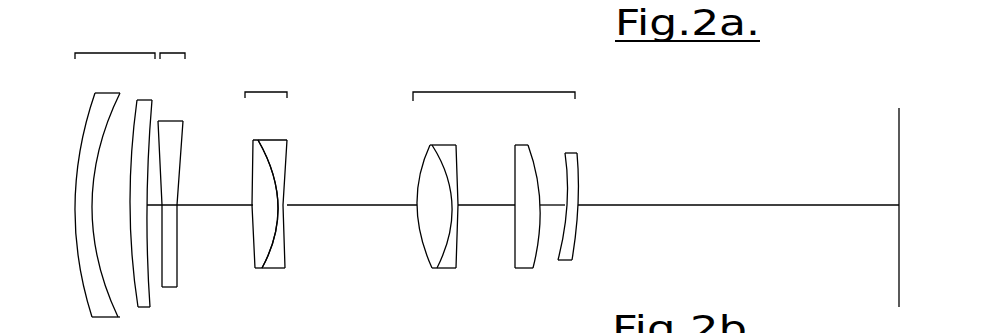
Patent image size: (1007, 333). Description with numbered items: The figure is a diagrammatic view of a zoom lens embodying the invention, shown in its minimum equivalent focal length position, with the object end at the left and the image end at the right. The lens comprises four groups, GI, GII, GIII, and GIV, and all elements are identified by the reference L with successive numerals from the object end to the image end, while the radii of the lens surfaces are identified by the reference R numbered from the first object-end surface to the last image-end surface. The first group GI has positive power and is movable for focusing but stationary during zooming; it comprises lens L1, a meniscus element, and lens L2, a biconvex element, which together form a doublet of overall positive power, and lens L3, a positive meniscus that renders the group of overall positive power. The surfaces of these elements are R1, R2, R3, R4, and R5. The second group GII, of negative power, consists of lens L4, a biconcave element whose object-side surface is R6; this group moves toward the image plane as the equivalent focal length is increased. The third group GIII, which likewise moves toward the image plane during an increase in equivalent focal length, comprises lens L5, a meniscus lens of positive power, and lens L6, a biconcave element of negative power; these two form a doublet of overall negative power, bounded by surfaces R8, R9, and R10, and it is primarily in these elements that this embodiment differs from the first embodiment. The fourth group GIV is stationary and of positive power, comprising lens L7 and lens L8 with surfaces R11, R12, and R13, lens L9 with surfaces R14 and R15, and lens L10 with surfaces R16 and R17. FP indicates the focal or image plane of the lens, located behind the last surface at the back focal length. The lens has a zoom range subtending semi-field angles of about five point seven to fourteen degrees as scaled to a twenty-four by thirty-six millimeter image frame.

The first group GI is at (120, 49).
The second group GII is at (187, 49).
The third group GIII is at (286, 87).
The fourth group GIV is at (520, 88).
The lens L1 is at (97, 307).
The lens L2 is at (117, 277).
The lens L3 is at (146, 293).
The lens L4 is at (176, 273).
The lens L5 is at (260, 251).
The lens L6 is at (278, 250).
The lens L7 is at (432, 250).
The lens L8 is at (453, 253).
The lens L9 is at (515, 257).
The lens L10 is at (567, 252).
The radius R1 is at (80, 151).
The radius R2 is at (122, 119).
The radius R3 is at (117, 116).
The radius R4 is at (134, 115).
The radius R5 is at (153, 110).
The radius R6 is at (161, 130).
The radius R8 is at (253, 163).
The radius R9 is at (256, 150).
The radius R10 is at (287, 157).
The radius R11 is at (427, 154).
The radius R12 is at (441, 143).
The radius R13 is at (457, 158).
The radius R14 is at (515, 177).
The radius R15 is at (531, 153).
The radius R16 is at (562, 172).
The radius R17 is at (578, 171).
The focal plane FP is at (897, 148).